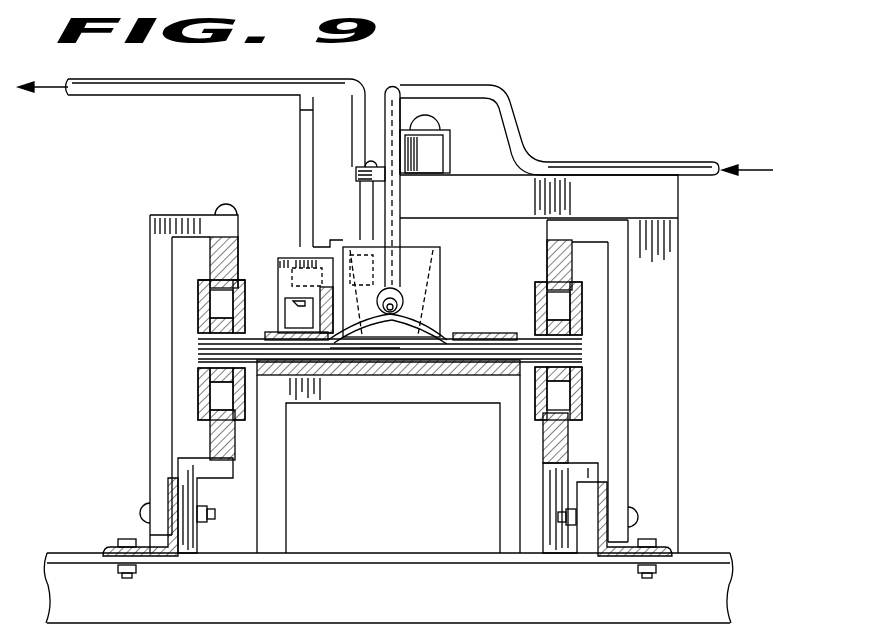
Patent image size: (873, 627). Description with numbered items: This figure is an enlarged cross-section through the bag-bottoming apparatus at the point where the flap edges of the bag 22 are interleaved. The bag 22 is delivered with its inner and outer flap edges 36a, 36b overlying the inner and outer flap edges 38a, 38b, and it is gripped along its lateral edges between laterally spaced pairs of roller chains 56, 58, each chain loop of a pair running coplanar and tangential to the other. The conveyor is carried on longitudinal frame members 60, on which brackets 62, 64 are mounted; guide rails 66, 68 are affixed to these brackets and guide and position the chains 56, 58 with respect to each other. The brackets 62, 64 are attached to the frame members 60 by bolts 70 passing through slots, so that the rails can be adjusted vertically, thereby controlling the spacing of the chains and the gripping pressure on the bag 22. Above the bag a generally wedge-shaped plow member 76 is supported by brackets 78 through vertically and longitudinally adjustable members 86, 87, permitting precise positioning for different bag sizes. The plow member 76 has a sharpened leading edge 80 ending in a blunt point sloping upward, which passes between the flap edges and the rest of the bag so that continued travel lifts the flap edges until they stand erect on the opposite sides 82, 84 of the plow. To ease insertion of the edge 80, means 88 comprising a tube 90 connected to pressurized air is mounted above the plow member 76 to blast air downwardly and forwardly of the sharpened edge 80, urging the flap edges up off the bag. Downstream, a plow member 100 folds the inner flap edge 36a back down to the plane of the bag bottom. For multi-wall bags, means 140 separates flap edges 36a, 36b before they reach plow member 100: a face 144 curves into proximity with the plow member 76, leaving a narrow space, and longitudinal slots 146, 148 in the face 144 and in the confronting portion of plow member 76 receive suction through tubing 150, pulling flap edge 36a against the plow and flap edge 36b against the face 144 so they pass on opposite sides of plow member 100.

The bag 22 is at (190, 346).
The inner flap edge 36a is at (406, 318).
The outer flap edge 36b is at (417, 313).
The inner flap edge 38a is at (355, 346).
The outer flap edge 38b is at (367, 346).
The roller chain 56 is at (198, 305).
The roller chain 58 is at (200, 395).
The longitudinal frame member 60 is at (112, 545).
The bracket 62 is at (152, 366).
The bracket 64 is at (195, 492).
The guide rail 66 is at (215, 247).
The guide rail 68 is at (210, 440).
The bolt 70 is at (214, 514).
The plow member 76 is at (418, 283).
The bracket 78 is at (500, 207).
The sharpened leading edge 80 is at (393, 372).
The side of plow member 82 is at (298, 283).
The side of plow member 84 is at (419, 284).
The adjustable member 86 is at (450, 142).
The adjustable member 87 is at (372, 197).
The means for urging flap edges upwardly 88 is at (410, 298).
The tube 90 is at (393, 90).
The plow member 100 is at (343, 241).
The means for separating flap edges 140 is at (252, 269).
The face 144 is at (312, 302).
The slot 146 is at (322, 288).
The slot 148 is at (352, 280).
The tubing 150 is at (173, 90).